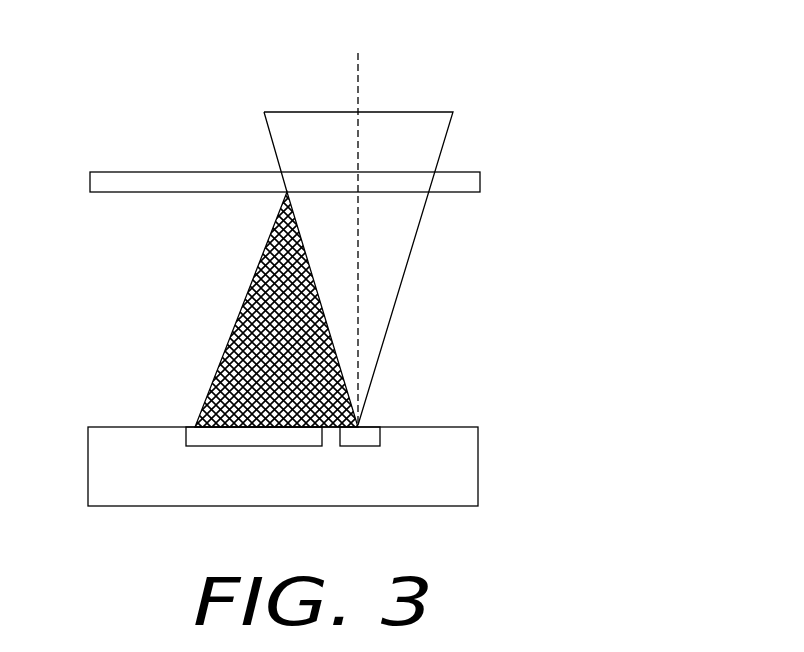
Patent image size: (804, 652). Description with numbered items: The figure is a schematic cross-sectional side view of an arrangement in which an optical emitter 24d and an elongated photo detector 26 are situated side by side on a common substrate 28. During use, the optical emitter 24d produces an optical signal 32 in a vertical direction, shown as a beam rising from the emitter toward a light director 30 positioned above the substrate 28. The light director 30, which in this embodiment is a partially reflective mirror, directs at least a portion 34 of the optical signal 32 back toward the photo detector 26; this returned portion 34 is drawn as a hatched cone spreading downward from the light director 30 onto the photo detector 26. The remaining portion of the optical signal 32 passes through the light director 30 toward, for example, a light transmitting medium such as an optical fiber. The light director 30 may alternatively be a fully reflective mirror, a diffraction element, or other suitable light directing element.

The optical signal 32 is at (413, 112).
The light director 30 is at (470, 182).
The portion of the optical signal 34 is at (237, 340).
The substrate 28 is at (458, 470).
The elongated photo detector 26 is at (206, 435).
The optical emitter 24d is at (362, 440).